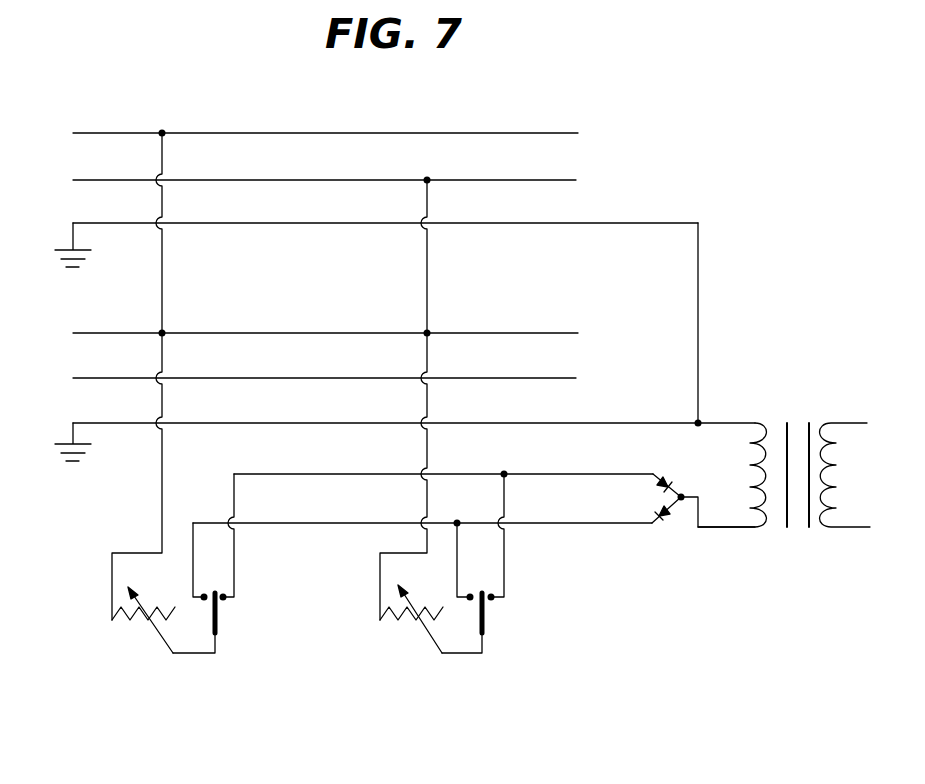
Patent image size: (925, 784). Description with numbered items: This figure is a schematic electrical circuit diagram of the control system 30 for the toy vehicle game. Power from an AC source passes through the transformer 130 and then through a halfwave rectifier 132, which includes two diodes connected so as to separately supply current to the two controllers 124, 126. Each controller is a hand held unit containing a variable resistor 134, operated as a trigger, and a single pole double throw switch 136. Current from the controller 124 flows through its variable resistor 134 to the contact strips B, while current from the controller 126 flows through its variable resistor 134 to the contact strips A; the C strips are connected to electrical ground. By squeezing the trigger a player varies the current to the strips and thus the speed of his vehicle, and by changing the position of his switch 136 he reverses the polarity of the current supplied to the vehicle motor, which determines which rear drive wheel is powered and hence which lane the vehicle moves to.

The control system 30 is at (611, 650).
The controller 124 is at (177, 695).
The controller 126 is at (449, 693).
The transformer 130 is at (783, 540).
The halfwave rectifier 132 is at (662, 540).
The variable resistor 134 is at (102, 602).
The single pole double throw switch 136 is at (232, 608).